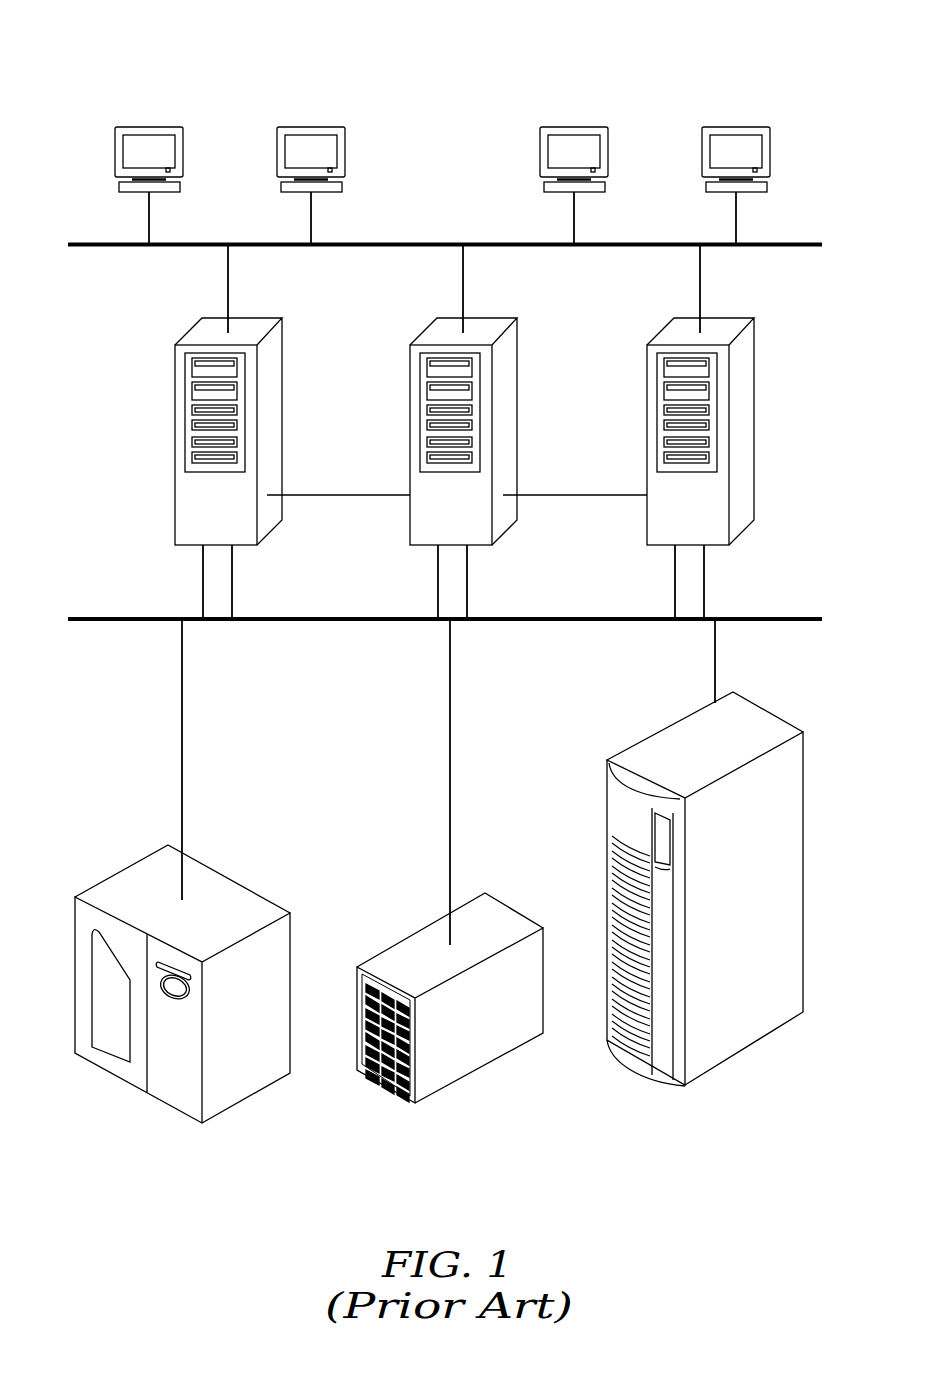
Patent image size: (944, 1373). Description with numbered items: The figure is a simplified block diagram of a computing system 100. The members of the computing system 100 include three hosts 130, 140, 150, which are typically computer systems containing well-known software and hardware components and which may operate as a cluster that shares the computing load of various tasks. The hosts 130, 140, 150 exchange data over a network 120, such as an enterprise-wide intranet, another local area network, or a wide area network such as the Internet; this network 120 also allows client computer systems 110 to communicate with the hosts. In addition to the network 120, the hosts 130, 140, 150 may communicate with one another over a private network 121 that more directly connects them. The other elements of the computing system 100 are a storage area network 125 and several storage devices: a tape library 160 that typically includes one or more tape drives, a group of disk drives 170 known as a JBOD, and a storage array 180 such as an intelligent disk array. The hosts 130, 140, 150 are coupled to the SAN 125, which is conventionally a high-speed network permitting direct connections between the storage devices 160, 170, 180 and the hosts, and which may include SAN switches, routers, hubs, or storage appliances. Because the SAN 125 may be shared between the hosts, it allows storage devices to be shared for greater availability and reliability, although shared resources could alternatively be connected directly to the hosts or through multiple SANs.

The computing system 100 is at (802, 48).
The client computer systems 110 is at (770, 155).
The network 120 is at (773, 247).
The private network 121 is at (353, 498).
The storage area network (SAN) 125 is at (750, 617).
The host 130 is at (175, 455).
The host 140 is at (410, 455).
The host 150 is at (647, 455).
The tape library 160 is at (232, 895).
The group of disk drives (JBOD) 170 is at (493, 913).
The storage array 180 is at (750, 713).